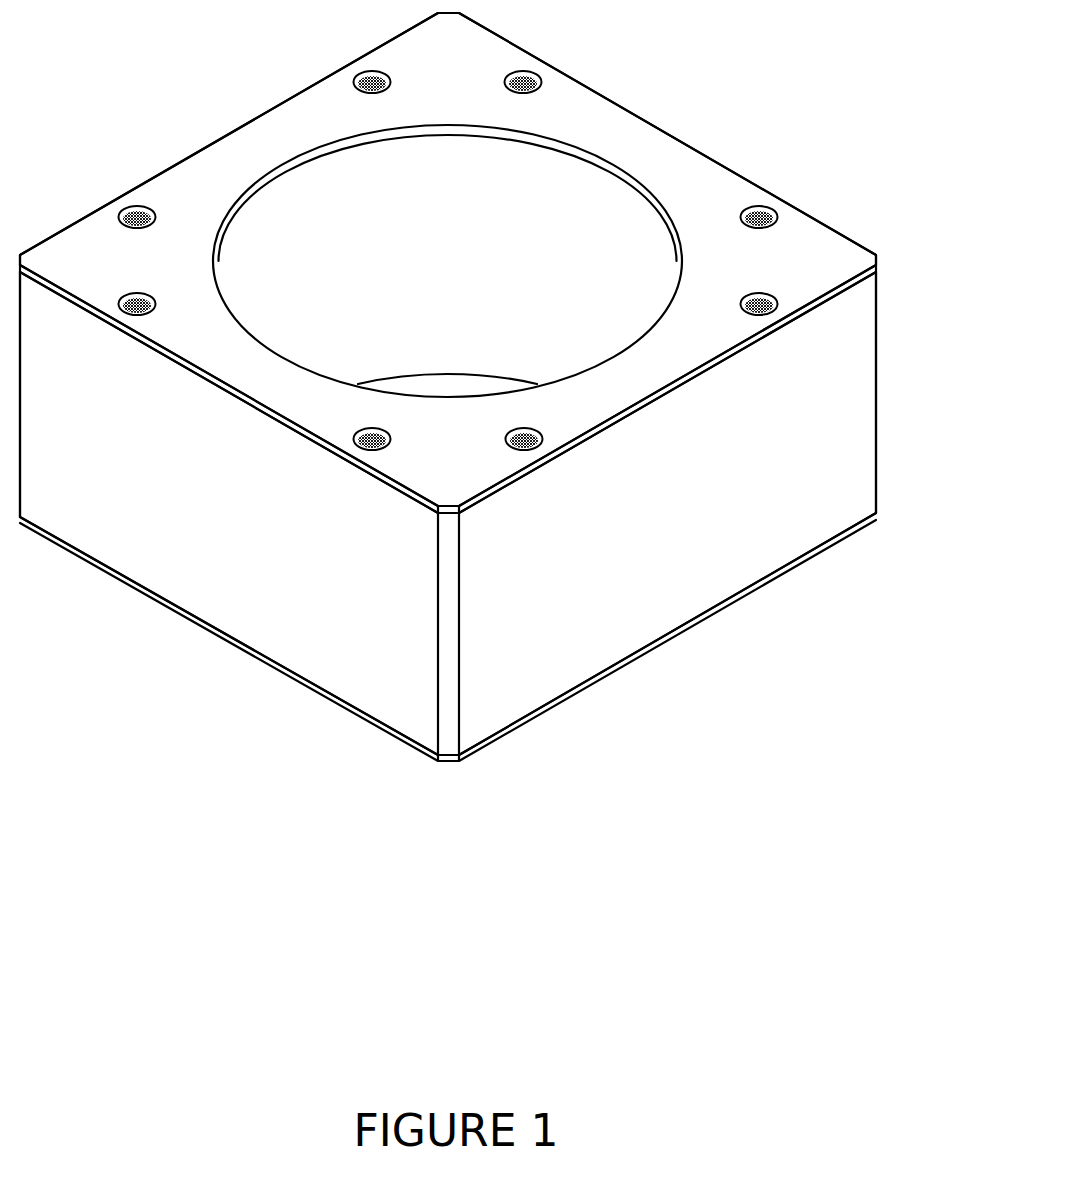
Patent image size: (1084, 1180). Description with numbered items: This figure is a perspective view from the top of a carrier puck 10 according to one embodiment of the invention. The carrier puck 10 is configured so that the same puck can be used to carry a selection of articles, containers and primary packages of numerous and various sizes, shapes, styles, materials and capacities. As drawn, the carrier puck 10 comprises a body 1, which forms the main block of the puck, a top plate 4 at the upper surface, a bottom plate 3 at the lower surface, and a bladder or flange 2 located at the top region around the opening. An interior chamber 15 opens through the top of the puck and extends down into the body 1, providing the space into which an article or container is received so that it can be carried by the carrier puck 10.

The carrier puck 10 is at (209, 662).
The body 1 is at (194, 515).
The bladder or flange 2 is at (418, 274).
The bottom plate 3 is at (573, 698).
The top plate 4 is at (170, 275).
The interior chamber 15 is at (557, 193).